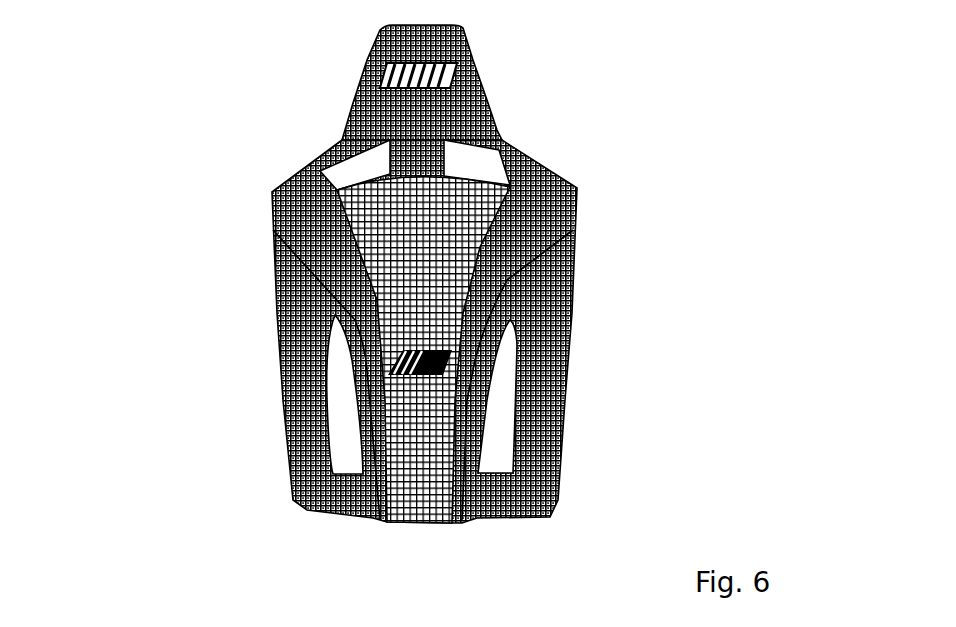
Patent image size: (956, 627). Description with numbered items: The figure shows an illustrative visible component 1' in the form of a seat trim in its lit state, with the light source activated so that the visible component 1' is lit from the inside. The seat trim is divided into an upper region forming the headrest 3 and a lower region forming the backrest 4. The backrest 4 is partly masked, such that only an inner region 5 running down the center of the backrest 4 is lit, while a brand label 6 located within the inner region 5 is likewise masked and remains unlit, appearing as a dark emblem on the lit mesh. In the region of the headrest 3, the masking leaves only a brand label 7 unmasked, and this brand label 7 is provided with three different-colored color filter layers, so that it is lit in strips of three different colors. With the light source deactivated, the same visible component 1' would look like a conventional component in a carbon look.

The visible component 1' is at (390, 297).
The headrest 3 is at (320, 85).
The backrest 4 is at (230, 300).
The inner region 5 is at (365, 198).
The brand label 6 is at (407, 394).
The brand label 7 is at (364, 57).